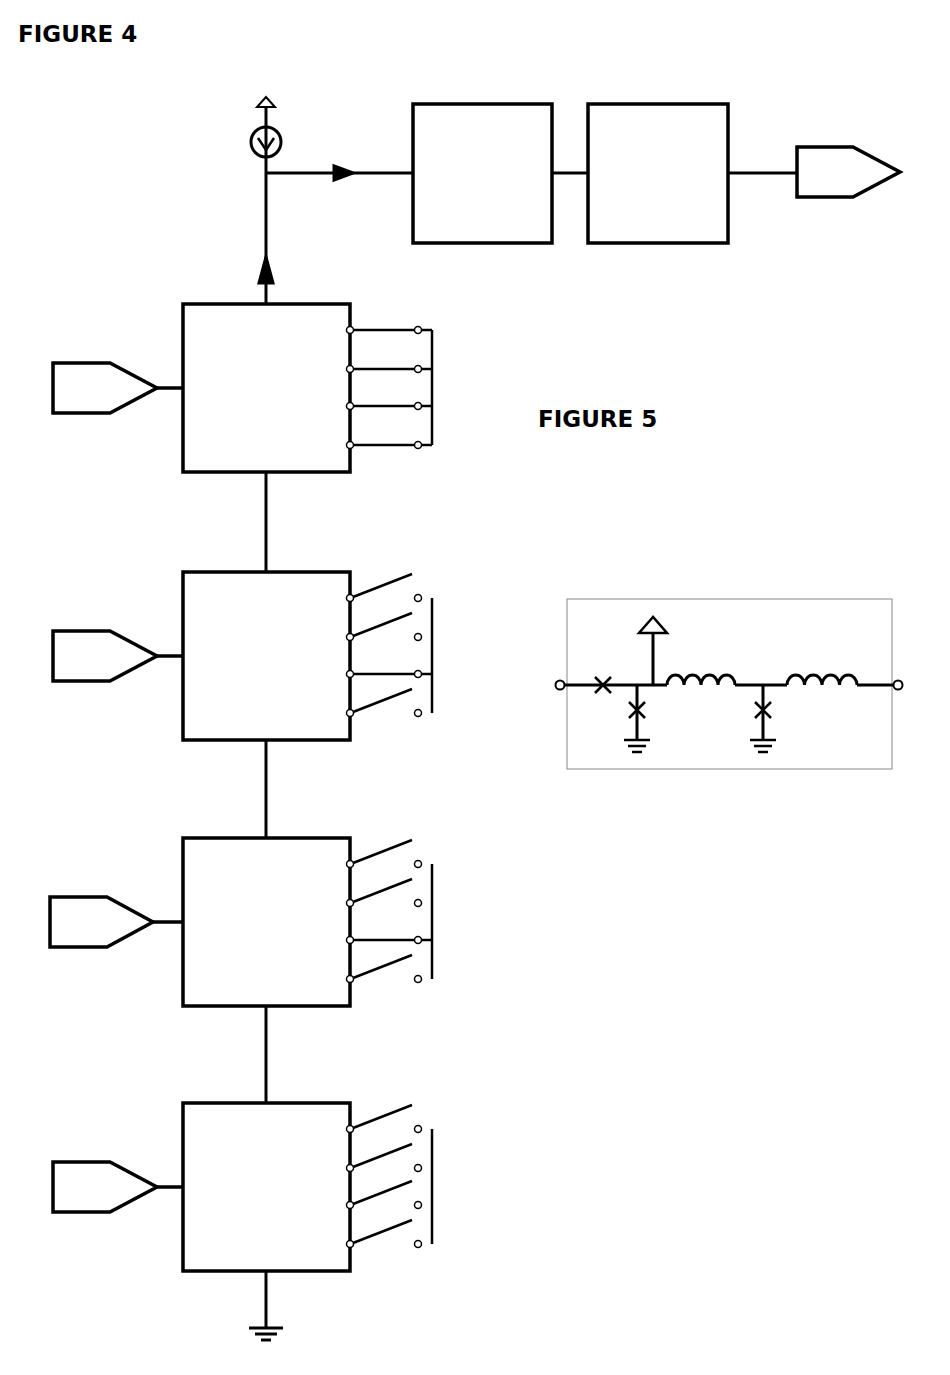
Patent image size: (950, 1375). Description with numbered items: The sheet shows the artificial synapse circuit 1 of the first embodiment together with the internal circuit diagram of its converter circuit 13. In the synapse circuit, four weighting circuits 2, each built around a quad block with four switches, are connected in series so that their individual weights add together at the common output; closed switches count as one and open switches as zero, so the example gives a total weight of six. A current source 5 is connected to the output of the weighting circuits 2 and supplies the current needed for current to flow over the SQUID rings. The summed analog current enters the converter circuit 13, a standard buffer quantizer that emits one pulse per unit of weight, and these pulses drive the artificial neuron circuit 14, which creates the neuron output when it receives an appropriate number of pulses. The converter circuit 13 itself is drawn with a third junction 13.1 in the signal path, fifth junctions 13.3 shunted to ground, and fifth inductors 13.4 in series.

In FIG. 4, the artificial synapse circuit 1 is at (157, 154).
In FIG. 4, the weighting circuit 2 is at (183, 334).
In FIG. 4, the current source 5 is at (281, 136).
In FIG. 4, the converter circuit 13 is at (482, 173).
In FIG. 5, the converter circuit 13 is at (617, 545).
In FIG. 4, the artificial neuron circuit 14 is at (658, 173).
In FIG. 5, the third junction 13.1 is at (602, 690).
In FIG. 5, the fifth junction 13.3 is at (644, 709).
In FIG. 5, the fifth inductor 13.4 is at (669, 677).